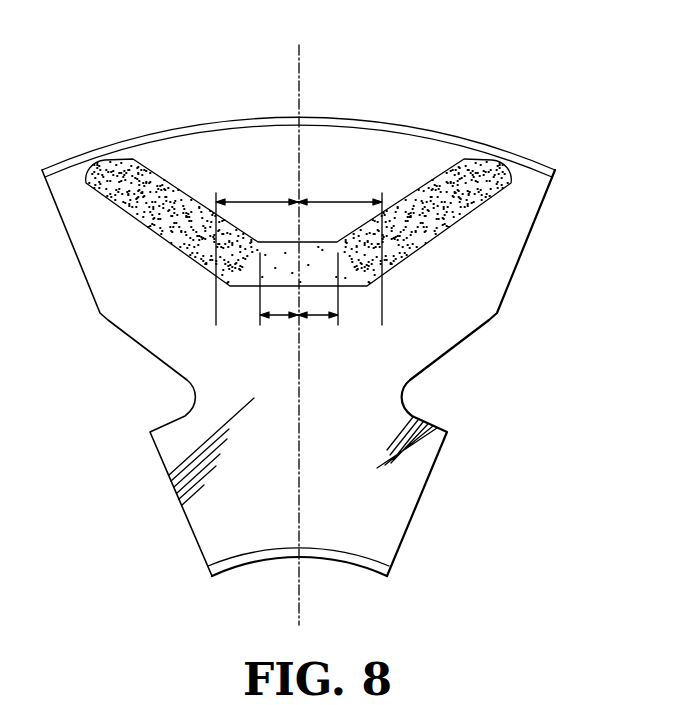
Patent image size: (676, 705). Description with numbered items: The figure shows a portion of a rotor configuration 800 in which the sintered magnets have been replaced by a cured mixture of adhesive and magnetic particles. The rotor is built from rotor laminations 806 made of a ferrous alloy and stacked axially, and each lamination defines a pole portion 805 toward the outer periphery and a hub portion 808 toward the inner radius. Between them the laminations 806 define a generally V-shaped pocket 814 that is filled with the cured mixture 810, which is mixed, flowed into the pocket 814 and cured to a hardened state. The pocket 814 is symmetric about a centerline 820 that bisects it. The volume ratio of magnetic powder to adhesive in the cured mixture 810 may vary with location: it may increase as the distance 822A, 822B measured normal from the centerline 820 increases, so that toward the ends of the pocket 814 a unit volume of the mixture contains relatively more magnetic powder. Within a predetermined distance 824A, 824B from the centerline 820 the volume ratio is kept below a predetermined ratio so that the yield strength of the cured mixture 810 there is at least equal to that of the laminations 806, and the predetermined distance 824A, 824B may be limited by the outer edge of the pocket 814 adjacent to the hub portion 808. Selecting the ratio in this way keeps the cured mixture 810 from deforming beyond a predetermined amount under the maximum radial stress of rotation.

The rotor configuration 800 is at (336, 330).
The pole portion 805 is at (322, 160).
The rotor laminations 806 is at (383, 498).
The hub portion 808 is at (277, 540).
The cured mixture 810 is at (342, 243).
The pocket 814 is at (454, 236).
The centerline 820 is at (298, 80).
The distance 822A is at (279, 318).
The distance 822B is at (317, 318).
The predetermined distance 824A is at (257, 202).
The predetermined distance 824B is at (341, 202).